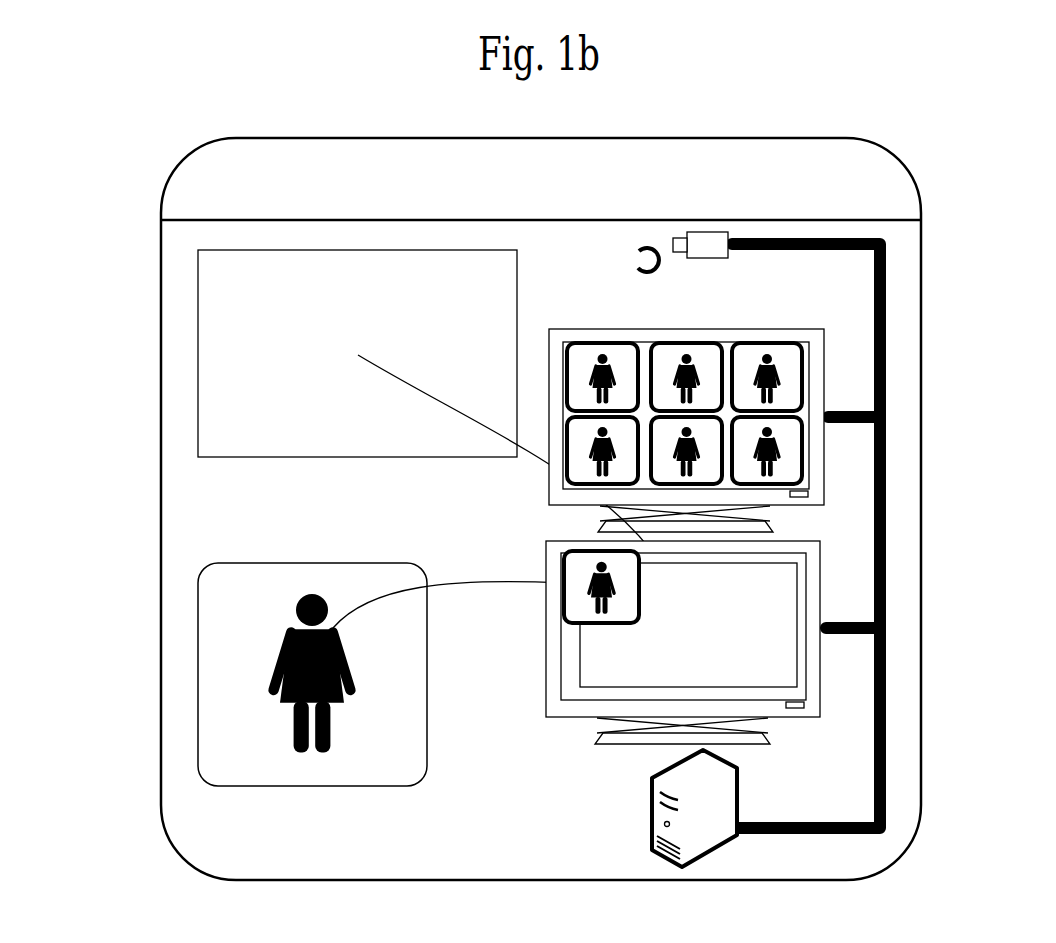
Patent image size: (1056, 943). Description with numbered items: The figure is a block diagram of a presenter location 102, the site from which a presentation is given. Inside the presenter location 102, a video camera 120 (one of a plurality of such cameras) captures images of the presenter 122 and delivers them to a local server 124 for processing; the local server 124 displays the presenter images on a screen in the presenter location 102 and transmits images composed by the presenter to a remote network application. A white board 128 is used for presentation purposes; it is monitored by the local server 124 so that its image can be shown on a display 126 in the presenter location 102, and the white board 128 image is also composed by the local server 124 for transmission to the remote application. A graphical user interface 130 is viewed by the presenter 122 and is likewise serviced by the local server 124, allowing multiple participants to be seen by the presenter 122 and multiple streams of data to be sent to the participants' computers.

The presenter location 102 is at (877, 158).
The video camera 120 is at (716, 233).
The presenter 122 is at (194, 673).
The local server 124 is at (737, 792).
The display 126 is at (822, 571).
The white board 128 is at (195, 312).
The graphical user interface 130 is at (824, 375).